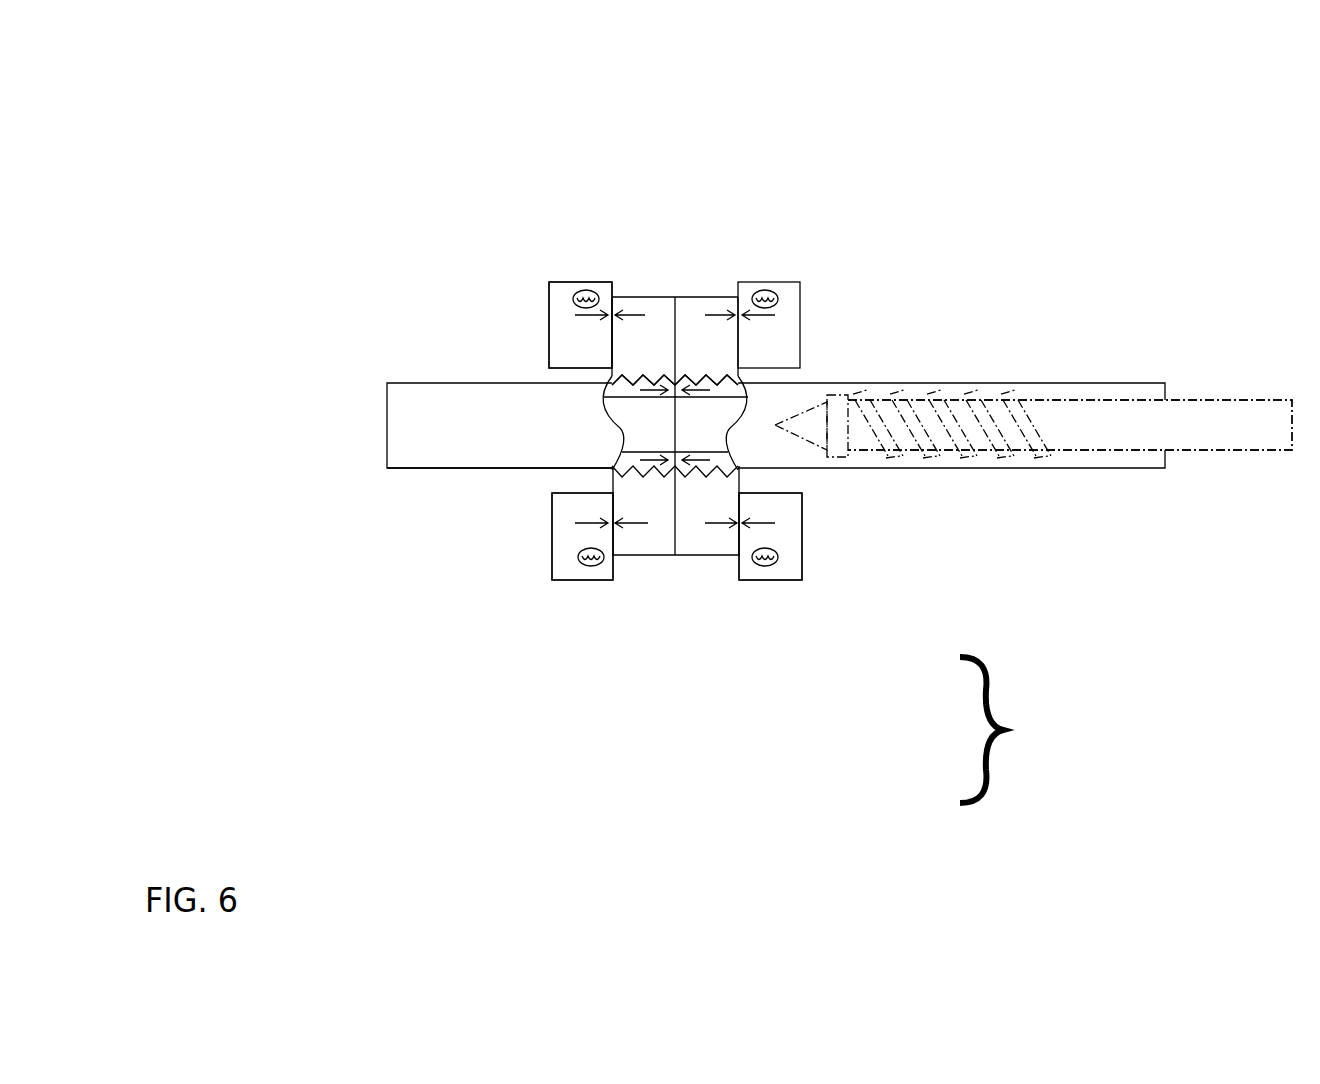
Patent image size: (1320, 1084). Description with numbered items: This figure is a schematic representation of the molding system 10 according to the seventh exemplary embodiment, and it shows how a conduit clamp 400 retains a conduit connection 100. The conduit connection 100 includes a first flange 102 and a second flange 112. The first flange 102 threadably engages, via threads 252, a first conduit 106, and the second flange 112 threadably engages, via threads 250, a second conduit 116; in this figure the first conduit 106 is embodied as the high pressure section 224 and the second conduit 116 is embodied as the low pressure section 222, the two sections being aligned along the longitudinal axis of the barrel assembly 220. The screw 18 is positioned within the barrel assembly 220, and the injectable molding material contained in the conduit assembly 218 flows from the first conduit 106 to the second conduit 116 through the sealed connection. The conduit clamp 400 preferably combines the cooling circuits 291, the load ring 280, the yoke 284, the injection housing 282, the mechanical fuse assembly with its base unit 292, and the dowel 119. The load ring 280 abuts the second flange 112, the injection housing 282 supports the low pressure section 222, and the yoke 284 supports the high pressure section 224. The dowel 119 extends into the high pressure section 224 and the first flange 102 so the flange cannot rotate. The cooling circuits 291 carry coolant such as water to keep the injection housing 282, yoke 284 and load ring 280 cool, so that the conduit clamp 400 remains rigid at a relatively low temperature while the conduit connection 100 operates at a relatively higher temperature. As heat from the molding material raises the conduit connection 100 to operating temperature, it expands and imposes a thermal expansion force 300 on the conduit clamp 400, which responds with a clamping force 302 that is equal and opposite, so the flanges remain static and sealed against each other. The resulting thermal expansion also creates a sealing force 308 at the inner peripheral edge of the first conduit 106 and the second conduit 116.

The molding system 10 is at (1158, 131).
The screw 18 is at (1033, 464).
The conduit connection 100 is at (840, 156).
The first flange 102 is at (705, 297).
The first conduit 106 is at (274, 487).
The second flange 112 is at (628, 297).
The second conduit 116 is at (1076, 547).
The dowel 119 is at (916, 742).
The conduit assembly 218 is at (1160, 256).
The barrel assembly 220 is at (1080, 295).
The low pressure section 222 is at (1041, 468).
The high pressure section 224 is at (430, 468).
The threads 250 is at (650, 378).
The threads 252 is at (745, 378).
The load ring 280 is at (549, 320).
The injection housing 282 is at (800, 322).
The yoke 284 is at (646, 544).
The cooling circuits 291 is at (580, 294).
The base unit 292 is at (770, 580).
The thermal expansion force 300 is at (715, 525).
The clamping force 302 is at (593, 525).
The sealing force 308 is at (700, 382).
The conduit clamp 400 is at (1024, 747).